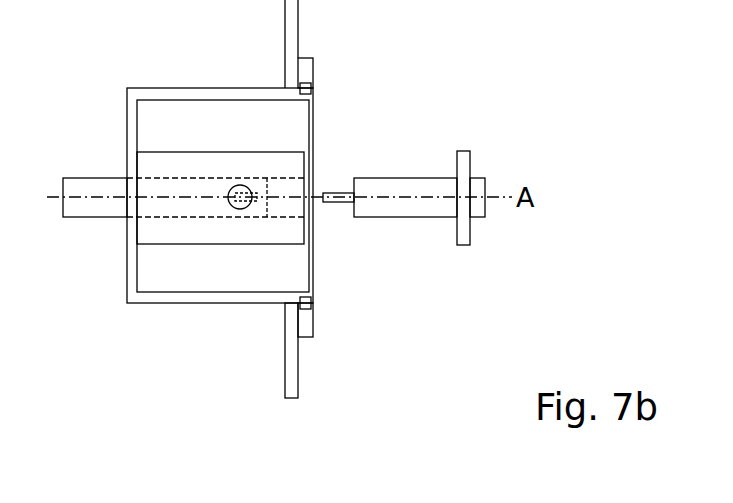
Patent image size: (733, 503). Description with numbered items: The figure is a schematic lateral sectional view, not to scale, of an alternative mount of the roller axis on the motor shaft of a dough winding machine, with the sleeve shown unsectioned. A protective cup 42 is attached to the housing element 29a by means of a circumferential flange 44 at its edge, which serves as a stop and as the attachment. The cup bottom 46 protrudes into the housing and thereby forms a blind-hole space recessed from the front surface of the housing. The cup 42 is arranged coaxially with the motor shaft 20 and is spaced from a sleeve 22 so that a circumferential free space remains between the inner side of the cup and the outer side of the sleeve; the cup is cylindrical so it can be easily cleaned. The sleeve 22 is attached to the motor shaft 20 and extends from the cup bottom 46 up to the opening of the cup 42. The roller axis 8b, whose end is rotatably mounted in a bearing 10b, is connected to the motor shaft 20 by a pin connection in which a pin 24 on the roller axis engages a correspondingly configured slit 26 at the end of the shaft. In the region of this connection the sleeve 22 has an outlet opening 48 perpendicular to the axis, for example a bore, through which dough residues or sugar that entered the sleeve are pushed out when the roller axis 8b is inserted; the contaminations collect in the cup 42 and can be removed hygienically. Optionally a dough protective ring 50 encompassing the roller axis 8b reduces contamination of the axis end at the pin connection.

The protective cup 42 is at (192, 92).
The cup bottom 46 is at (136, 113).
The sleeve 22 is at (196, 236).
The motor shaft 20 is at (96, 206).
The outlet opening 48 is at (239, 187).
The slit 26 is at (278, 203).
The pin 24 is at (346, 193).
The roller axis end 8b is at (440, 208).
The dough protective ring 50 is at (463, 158).
The housing element 29a is at (295, 32).
The circumferential flange 44 is at (308, 70).
The bearing 10b is at (355, 318).